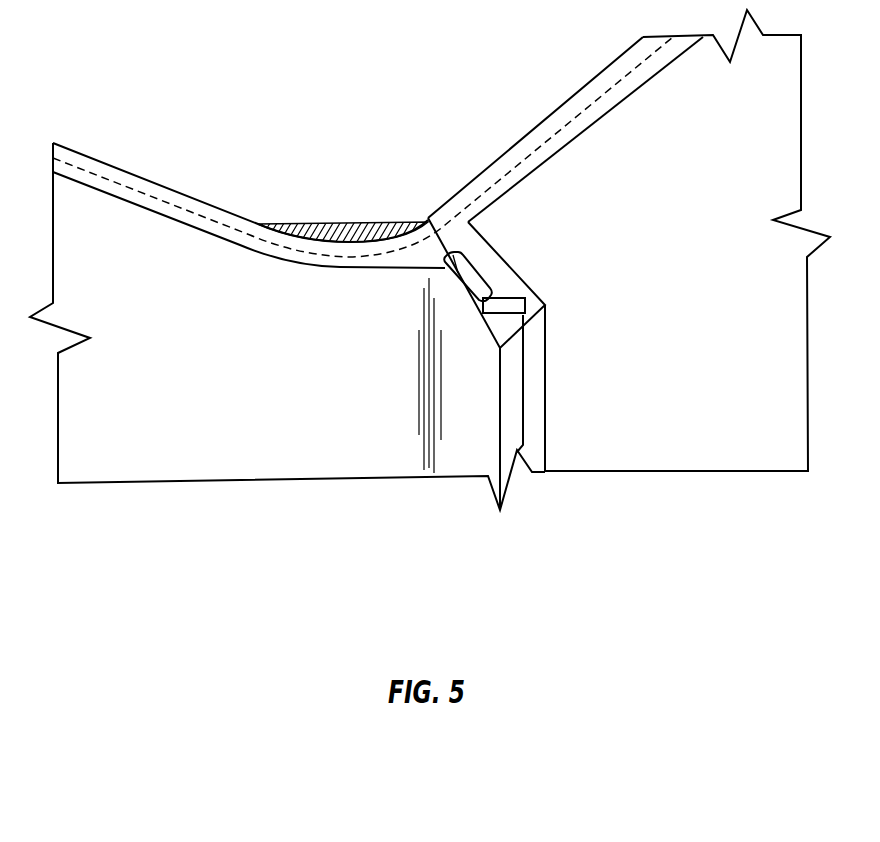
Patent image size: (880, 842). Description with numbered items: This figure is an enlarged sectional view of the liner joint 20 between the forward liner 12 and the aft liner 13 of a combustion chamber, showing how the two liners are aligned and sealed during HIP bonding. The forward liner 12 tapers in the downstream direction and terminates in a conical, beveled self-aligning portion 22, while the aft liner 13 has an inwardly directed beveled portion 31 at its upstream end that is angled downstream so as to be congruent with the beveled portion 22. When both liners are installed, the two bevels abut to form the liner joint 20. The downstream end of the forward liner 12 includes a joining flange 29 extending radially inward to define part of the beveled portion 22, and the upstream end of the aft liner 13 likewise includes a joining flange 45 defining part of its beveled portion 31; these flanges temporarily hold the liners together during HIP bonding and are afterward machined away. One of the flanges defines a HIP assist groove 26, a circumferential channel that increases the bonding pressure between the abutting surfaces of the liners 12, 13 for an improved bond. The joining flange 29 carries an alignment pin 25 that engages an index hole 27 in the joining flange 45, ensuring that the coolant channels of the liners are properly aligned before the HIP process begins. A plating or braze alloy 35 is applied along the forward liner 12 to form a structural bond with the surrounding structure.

The forward liner 12 is at (195, 453).
The aft liner 13 is at (763, 435).
The liner joint 20 is at (378, 152).
The beveled self-aligning portion 22 is at (440, 258).
The alignment pin 25 is at (525, 304).
The HIP assist groove 26 is at (458, 290).
The index hole 27 is at (522, 293).
The joining flange 29 is at (497, 332).
The beveled portion 31 is at (468, 222).
The braze alloy 35 is at (353, 223).
The joining flange 45 is at (537, 377).